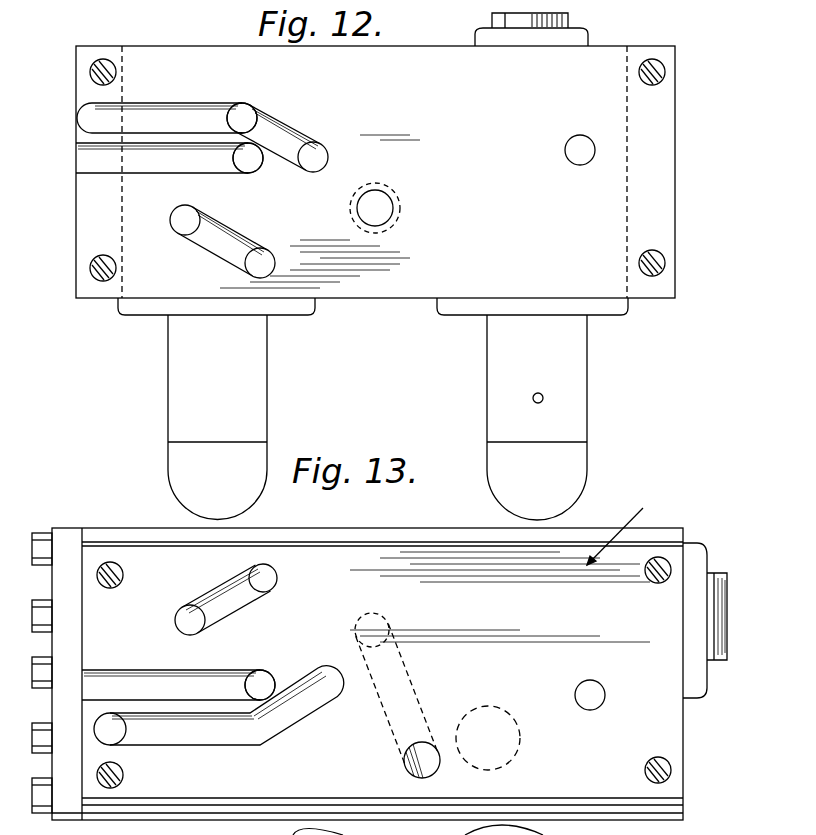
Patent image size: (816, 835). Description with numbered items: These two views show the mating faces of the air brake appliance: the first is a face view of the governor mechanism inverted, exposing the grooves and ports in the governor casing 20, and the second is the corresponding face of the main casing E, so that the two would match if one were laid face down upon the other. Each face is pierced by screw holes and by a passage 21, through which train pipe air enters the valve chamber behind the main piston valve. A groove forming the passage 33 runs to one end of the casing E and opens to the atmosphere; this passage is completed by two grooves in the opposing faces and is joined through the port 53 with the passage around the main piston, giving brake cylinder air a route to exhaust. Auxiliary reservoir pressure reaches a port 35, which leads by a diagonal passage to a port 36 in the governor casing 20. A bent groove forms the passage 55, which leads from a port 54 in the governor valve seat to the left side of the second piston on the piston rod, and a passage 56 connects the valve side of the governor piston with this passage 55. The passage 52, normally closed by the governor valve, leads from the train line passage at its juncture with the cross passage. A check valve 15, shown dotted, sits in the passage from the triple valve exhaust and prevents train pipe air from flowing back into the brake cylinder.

In FIG. 13, the check valve 15 is at (497, 720).
In FIG. 12, the governor casing 20 is at (375, 266).
In FIG. 13, the governor casing 20 is at (379, 681).
In FIG. 12, the passage 21 is at (580, 157).
In FIG. 13, the passage 21 is at (593, 703).
In FIG. 12, the passage 33 is at (148, 163).
In FIG. 13, the passage 33 is at (143, 680).
In FIG. 12, the port 35 is at (264, 267).
In FIG. 13, the port 35 is at (272, 582).
In FIG. 12, the port 36 is at (187, 216).
In FIG. 13, the port 36 is at (187, 615).
In FIG. 12, the passage 52 is at (382, 198).
In FIG. 13, the passage 52 is at (405, 692).
In FIG. 12, the port 53 is at (253, 162).
In FIG. 13, the port 53 is at (255, 678).
In FIG. 12, the port 54 is at (244, 119).
In FIG. 12, the passage 55 is at (193, 117).
In FIG. 13, the passage 55 is at (238, 737).
In FIG. 12, the passage 56 is at (320, 155).
In FIG. 13, the casing E is at (621, 529).